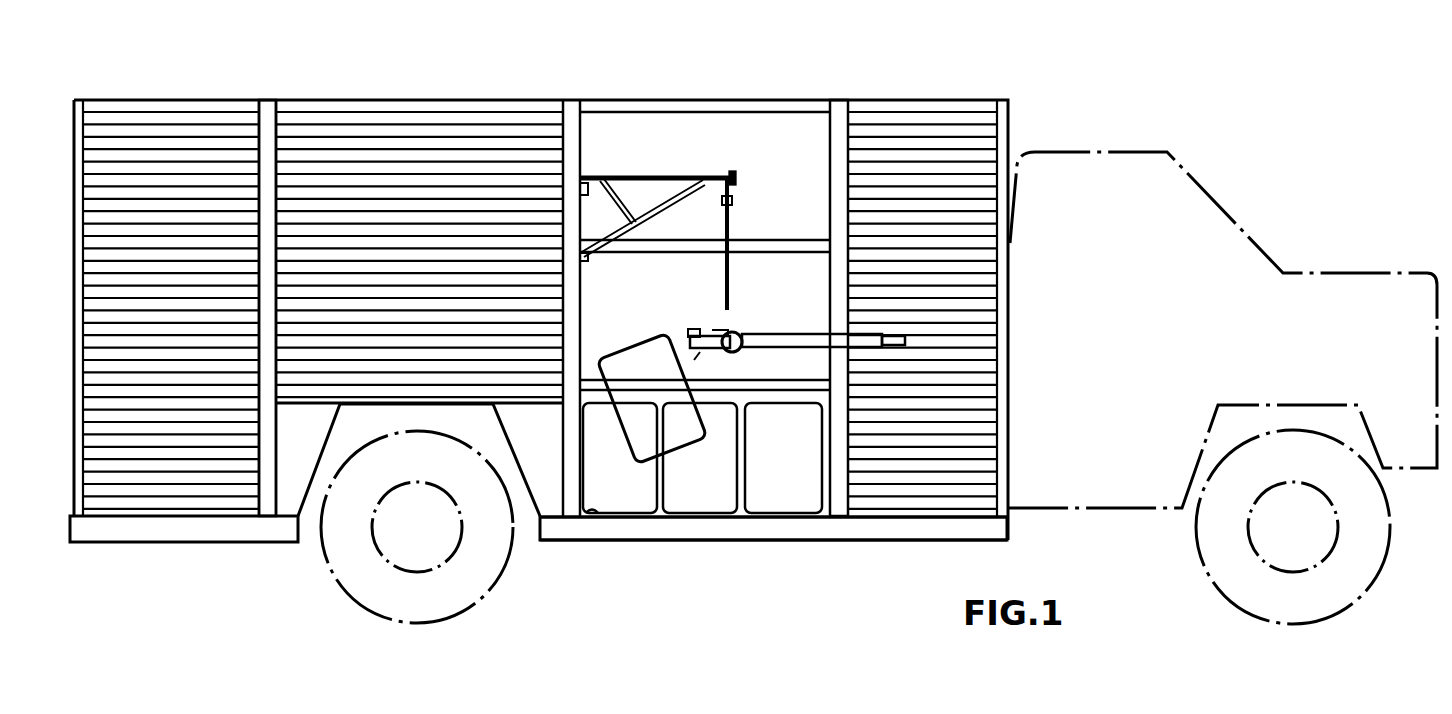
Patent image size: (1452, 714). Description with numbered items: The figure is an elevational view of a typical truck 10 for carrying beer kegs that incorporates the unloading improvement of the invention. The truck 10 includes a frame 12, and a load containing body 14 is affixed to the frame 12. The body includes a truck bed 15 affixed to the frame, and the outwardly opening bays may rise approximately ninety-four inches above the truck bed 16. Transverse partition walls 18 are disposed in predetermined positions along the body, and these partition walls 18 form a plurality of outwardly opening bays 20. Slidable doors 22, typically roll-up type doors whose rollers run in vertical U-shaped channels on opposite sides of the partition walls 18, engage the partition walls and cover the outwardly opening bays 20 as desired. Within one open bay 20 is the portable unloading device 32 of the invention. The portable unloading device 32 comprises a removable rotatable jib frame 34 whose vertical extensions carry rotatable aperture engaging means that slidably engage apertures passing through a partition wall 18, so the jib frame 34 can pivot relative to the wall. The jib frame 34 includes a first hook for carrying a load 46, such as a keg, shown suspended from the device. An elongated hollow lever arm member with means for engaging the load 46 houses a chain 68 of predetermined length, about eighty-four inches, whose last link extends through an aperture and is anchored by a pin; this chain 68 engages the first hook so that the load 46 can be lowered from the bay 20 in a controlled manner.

The truck 10 is at (1134, 131).
The frame 12 is at (805, 520).
The load containing body 14 is at (112, 100).
The truck bed 15 is at (597, 518).
The truck bed 16 is at (937, 530).
The transverse partition walls 18 is at (268, 107).
The outwardly opening bays 20 is at (763, 130).
The slidable doors 22 is at (936, 105).
The portable unloading device 32 is at (702, 292).
The removable rotatable jib frame 34 is at (690, 163).
The load 46 is at (648, 346).
The chain 68 is at (732, 224).